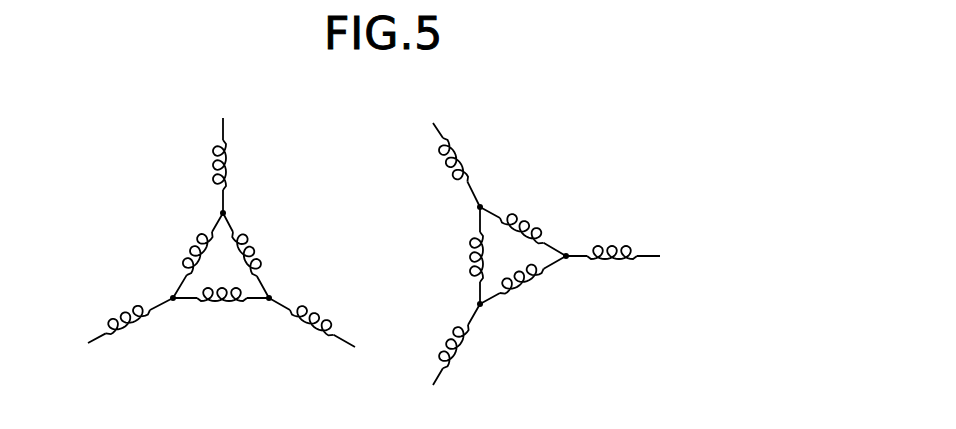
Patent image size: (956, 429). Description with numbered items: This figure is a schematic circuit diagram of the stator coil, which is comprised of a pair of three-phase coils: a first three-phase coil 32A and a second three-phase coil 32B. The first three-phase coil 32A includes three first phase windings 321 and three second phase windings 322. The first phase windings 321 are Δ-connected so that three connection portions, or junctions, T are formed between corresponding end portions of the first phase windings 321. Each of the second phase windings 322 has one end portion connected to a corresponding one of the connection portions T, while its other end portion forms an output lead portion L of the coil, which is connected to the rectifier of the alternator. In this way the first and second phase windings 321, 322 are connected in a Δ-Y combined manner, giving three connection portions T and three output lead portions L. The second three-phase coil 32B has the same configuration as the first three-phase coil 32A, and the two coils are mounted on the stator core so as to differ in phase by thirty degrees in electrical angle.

The first three-phase coil 32A is at (266, 188).
The second three-phase coil 32B is at (523, 181).
The first phase windings 321 is at (193, 243).
The second phase windings 322 is at (127, 323).